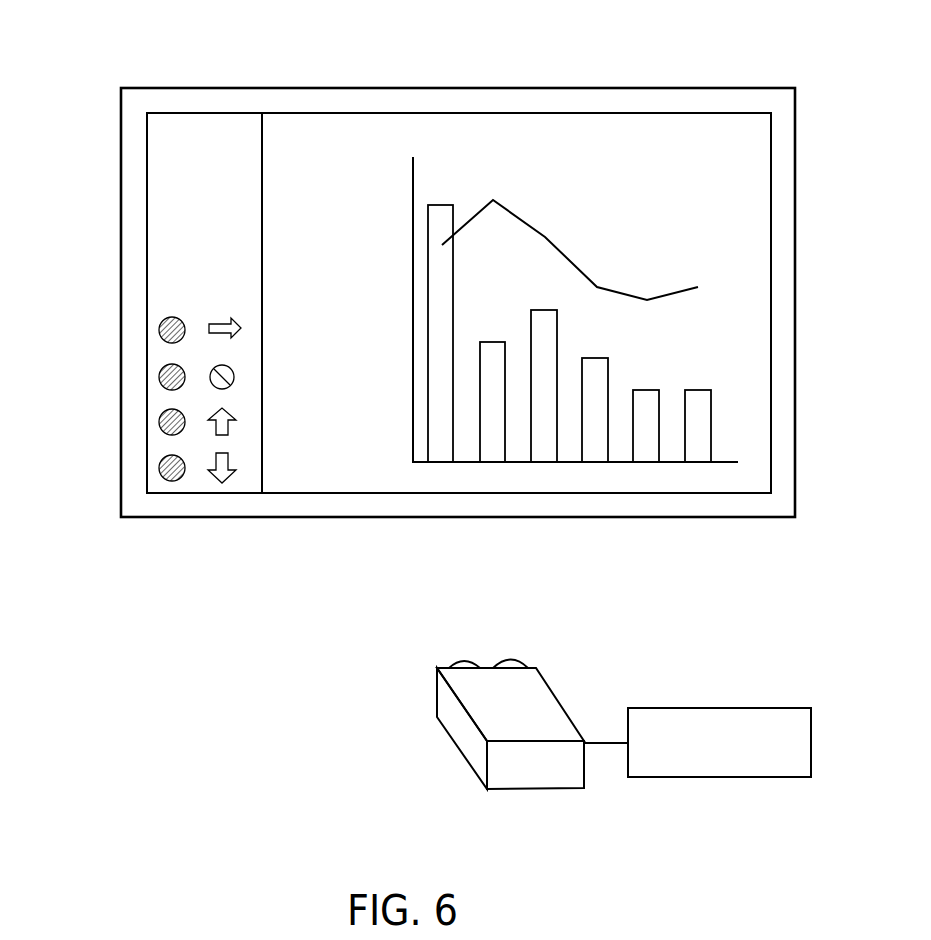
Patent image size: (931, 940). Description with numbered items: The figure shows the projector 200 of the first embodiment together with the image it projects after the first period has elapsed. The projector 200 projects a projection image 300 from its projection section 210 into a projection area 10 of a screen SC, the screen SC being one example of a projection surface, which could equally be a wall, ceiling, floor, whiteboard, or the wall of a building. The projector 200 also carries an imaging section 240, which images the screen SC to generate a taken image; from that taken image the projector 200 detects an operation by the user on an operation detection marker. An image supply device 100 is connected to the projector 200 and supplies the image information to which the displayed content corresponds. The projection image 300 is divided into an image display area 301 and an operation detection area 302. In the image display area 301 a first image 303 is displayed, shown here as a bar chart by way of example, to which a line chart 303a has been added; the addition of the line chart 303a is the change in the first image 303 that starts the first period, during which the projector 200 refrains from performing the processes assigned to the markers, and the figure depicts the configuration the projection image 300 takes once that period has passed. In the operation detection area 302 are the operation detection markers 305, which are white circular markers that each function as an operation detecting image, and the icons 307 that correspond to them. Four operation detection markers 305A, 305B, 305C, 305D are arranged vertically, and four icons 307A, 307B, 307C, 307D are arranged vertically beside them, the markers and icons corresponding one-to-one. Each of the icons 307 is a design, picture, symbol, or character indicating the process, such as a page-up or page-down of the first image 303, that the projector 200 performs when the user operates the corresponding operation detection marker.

The projection area 10 is at (430, 505).
The screen SC is at (622, 88).
The projection image 300 is at (331, 99).
The image display area 301 is at (517, 113).
The operation detection area 302 is at (197, 112).
The first image 303 is at (586, 249).
The line chart 303a is at (582, 271).
The operation detection markers 305 is at (96, 387).
The operation detection marker 305A is at (159, 330).
The operation detection marker 305B is at (159, 377).
The operation detection marker 305C is at (159, 422).
The operation detection marker 305D is at (123, 459).
The icons 307 is at (299, 390).
The icon 307A is at (241, 327).
The icon 307B is at (234, 376).
The icon 307C is at (236, 416).
The icon 307D is at (272, 462).
The projector 200 is at (496, 711).
The projection section 210 is at (458, 660).
The imaging section 240 is at (517, 659).
The image supply device 100 is at (720, 708).